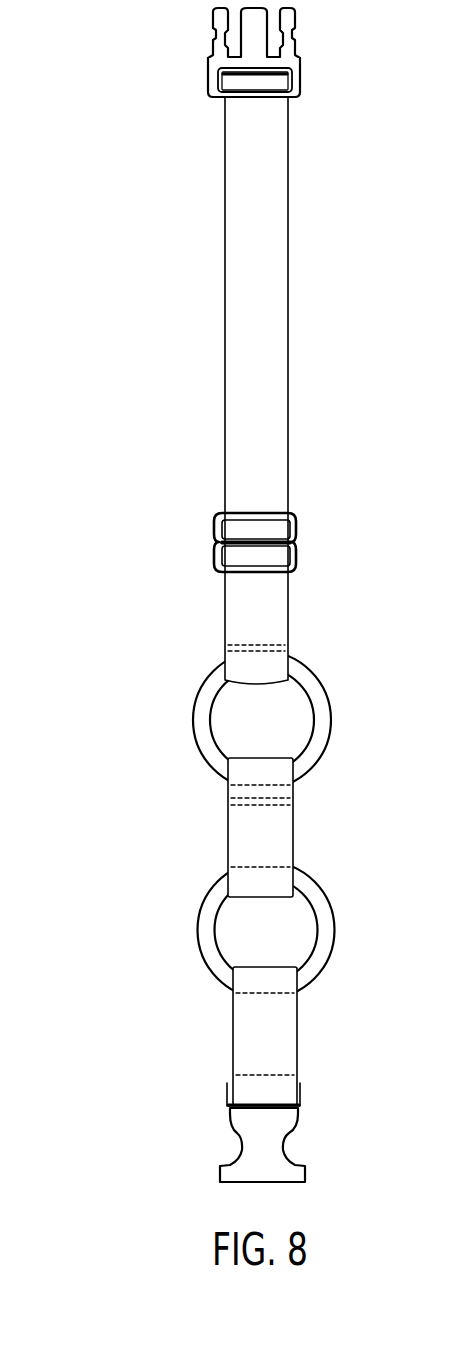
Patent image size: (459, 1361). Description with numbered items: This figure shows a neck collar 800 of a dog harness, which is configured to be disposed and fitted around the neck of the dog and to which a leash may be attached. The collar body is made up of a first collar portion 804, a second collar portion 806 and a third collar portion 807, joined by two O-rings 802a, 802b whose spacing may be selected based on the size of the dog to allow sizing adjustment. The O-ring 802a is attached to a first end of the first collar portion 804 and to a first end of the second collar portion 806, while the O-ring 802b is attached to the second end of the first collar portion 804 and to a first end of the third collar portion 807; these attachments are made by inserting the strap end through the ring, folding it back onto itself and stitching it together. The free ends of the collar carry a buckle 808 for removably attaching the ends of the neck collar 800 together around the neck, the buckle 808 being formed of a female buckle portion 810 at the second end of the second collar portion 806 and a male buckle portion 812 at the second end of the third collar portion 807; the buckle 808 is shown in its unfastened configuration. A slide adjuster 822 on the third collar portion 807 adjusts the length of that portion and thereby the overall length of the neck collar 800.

The neck collar 800 is at (139, 187).
The O-ring 802a is at (198, 935).
The O-ring 802b is at (200, 700).
The first collar portion 804 is at (226, 832).
The second collar portion 806 is at (232, 1036).
The third collar portion 807 is at (225, 330).
The buckle 808 is at (259, 599).
The female buckle portion 810 is at (285, 1145).
The male buckle portion 812 is at (296, 38).
The slide adjuster 822 is at (214, 526).